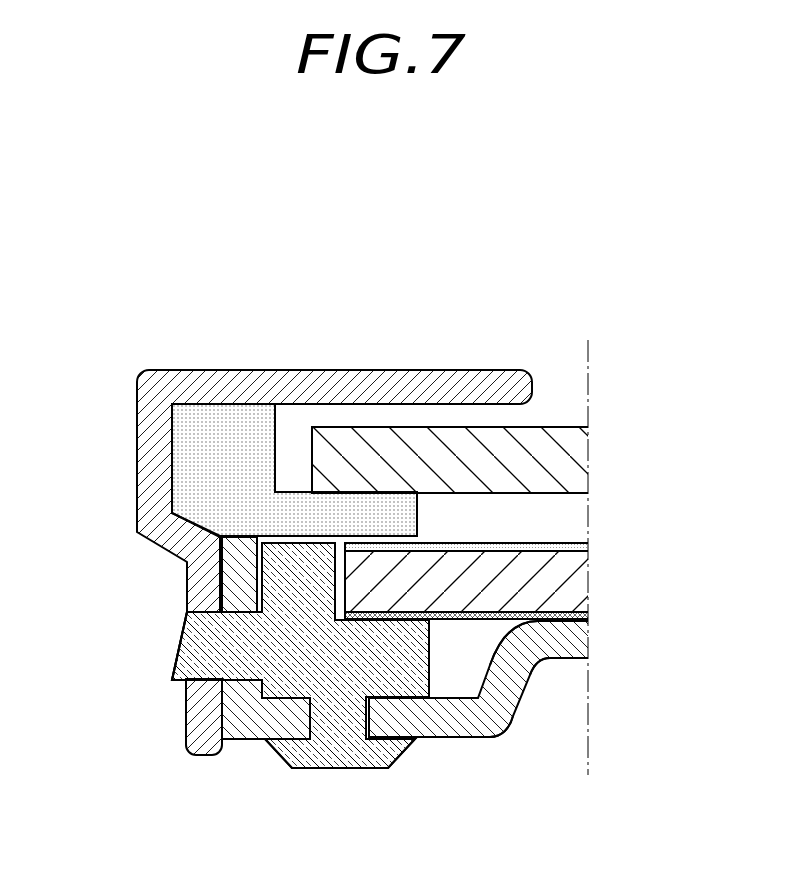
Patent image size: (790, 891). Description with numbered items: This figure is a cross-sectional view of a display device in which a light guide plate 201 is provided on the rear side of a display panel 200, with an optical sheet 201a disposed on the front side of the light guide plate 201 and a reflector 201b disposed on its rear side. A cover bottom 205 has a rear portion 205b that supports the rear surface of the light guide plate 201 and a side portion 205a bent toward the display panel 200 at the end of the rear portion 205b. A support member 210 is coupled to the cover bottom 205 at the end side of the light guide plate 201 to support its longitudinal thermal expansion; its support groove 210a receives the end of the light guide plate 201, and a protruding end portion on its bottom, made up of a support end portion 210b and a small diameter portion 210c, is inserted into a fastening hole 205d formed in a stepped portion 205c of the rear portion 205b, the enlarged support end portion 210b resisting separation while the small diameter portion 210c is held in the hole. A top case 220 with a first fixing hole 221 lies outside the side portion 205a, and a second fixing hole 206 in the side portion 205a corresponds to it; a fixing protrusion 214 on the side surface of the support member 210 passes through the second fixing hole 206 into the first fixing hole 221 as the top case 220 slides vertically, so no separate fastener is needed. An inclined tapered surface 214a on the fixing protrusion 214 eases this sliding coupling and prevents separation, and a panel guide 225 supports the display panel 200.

The display panel 200 is at (588, 458).
The light guide plate 201 is at (585, 582).
The optical sheet 201a is at (583, 550).
The reflector 201b is at (583, 616).
The cover bottom 205 is at (520, 742).
The side portion 205a is at (238, 547).
The rear portion 205b is at (578, 648).
The stepped portion 205c is at (442, 715).
The fastening hole 205d is at (307, 708).
The second fixing hole 206 is at (222, 572).
The support member 210 is at (368, 700).
The support groove 210a is at (390, 623).
The support end portion 210b is at (350, 753).
The small diameter portion 210c is at (340, 727).
The fixing protrusion 214 is at (202, 642).
The tapered surface 214a is at (178, 650).
The top case 220 is at (195, 377).
The first fixing hole 221 is at (202, 608).
The panel guide 225 is at (217, 413).